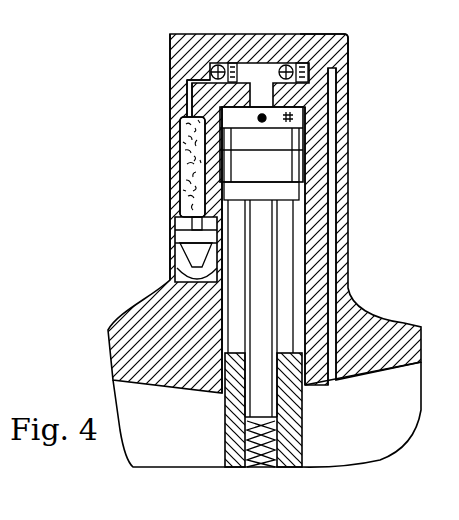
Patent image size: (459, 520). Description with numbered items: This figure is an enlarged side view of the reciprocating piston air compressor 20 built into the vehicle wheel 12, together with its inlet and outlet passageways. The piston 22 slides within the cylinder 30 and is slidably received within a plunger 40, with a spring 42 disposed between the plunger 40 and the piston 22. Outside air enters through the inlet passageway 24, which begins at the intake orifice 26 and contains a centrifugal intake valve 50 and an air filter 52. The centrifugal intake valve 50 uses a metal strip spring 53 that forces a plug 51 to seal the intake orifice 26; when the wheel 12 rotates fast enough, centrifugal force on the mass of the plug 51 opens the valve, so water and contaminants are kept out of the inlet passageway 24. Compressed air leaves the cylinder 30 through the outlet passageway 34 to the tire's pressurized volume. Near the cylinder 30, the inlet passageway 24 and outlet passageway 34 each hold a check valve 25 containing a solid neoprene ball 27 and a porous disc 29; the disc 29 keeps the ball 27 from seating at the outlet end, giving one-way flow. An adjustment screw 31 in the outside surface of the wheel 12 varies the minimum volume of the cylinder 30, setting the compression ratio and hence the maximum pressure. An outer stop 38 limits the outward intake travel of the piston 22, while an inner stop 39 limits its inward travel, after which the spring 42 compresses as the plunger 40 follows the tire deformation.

The vehicle wheel 12 is at (365, 318).
The air compressor 20 is at (302, 169).
The piston 22 is at (220, 170).
The inlet passageway 24 is at (171, 48).
The check valve 25 is at (236, 62).
The intake orifice 26 is at (170, 222).
The solid neoprene ball 27 is at (222, 63).
The porous disc 29 is at (349, 42).
The cylinder 30 is at (290, 140).
The adjustment screw 31 is at (258, 116).
The outlet passageway 34 is at (330, 100).
The outer stop 38 is at (307, 195).
The inner stop 39 is at (300, 118).
The plunger 40 is at (300, 453).
The spring 42 is at (228, 445).
The centrifugal intake valve 50 is at (165, 243).
The plug 51 is at (172, 262).
The air filter 52 is at (178, 146).
The metal strip spring 53 is at (172, 286).